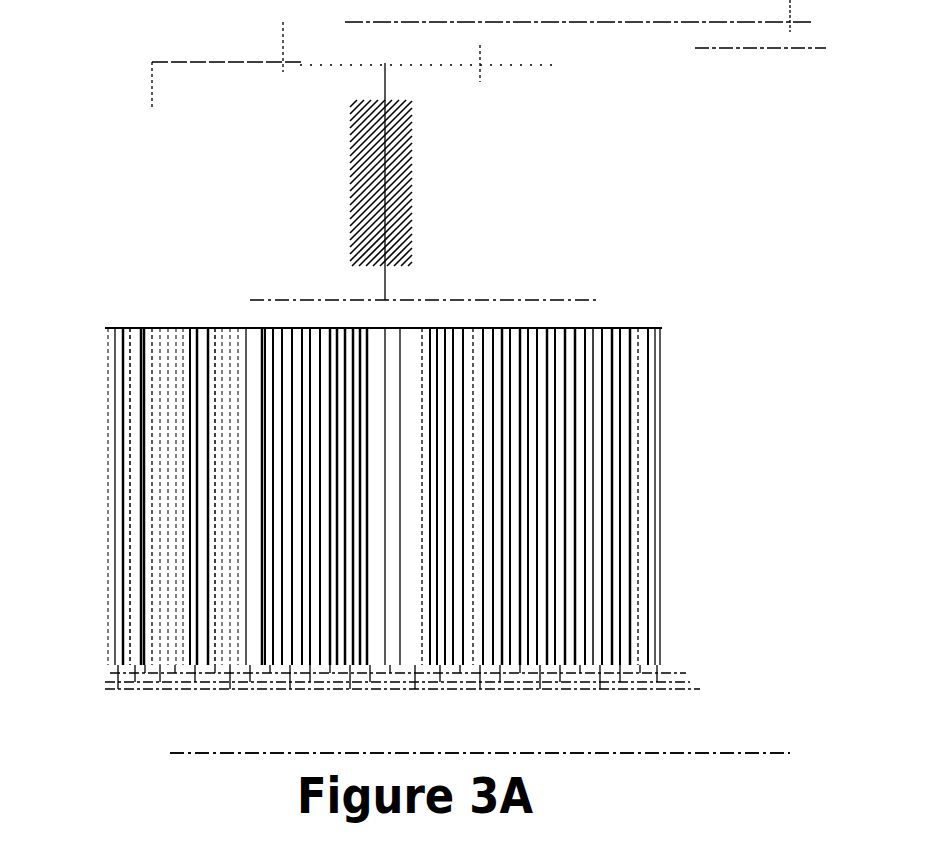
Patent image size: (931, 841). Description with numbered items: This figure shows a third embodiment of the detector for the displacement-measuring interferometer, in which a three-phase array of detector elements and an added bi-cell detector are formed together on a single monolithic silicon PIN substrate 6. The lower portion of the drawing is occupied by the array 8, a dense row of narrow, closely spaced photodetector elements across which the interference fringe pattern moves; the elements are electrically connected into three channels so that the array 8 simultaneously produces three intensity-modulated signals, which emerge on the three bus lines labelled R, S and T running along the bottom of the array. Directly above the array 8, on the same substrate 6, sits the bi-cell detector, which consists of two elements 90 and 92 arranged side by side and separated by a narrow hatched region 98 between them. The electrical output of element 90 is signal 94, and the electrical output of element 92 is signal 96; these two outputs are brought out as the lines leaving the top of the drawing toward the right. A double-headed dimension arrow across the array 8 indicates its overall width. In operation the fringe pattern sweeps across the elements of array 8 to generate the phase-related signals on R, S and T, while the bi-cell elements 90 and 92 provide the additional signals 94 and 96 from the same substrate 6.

The PIN substrate 6 is at (410, 379).
The bi-cell detector element 90 is at (227, 69).
The bi-cell detector element 92 is at (448, 81).
The electrical output signal 94 is at (605, 19).
The electrical output signal 96 is at (780, 57).
The hatched contact block 98 is at (228, 183).
The array 8 is at (648, 518).
The intensity-modulated optical signal channel R is at (439, 658).
The intensity-modulated optical signal channel S is at (640, 685).
The intensity-modulated optical signal channel T is at (436, 712).